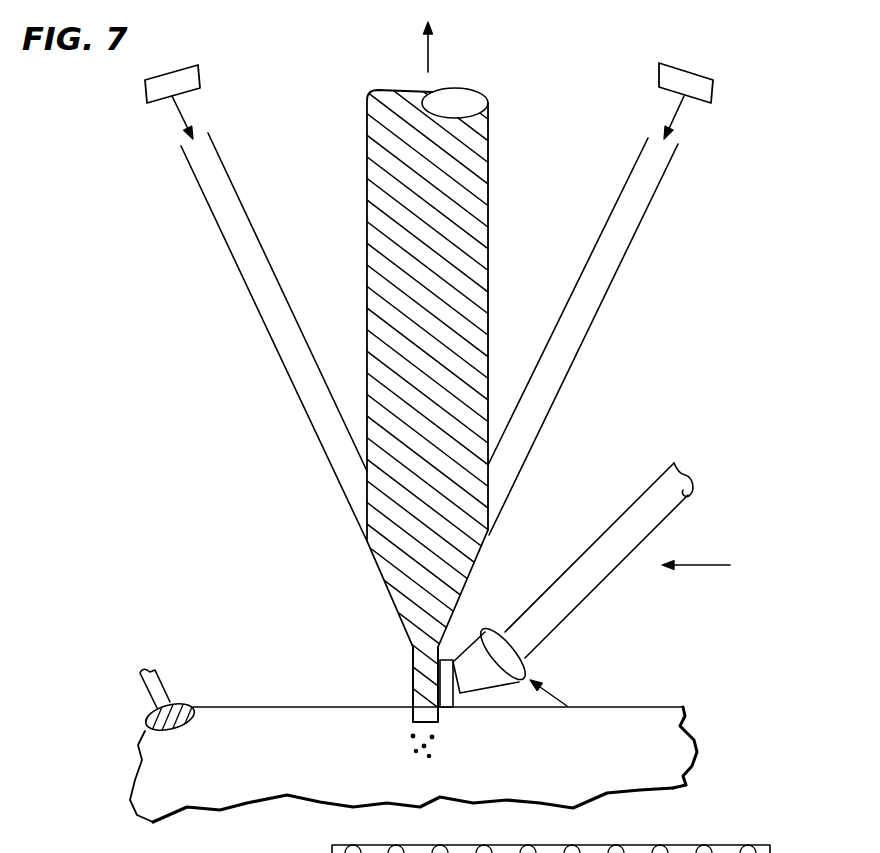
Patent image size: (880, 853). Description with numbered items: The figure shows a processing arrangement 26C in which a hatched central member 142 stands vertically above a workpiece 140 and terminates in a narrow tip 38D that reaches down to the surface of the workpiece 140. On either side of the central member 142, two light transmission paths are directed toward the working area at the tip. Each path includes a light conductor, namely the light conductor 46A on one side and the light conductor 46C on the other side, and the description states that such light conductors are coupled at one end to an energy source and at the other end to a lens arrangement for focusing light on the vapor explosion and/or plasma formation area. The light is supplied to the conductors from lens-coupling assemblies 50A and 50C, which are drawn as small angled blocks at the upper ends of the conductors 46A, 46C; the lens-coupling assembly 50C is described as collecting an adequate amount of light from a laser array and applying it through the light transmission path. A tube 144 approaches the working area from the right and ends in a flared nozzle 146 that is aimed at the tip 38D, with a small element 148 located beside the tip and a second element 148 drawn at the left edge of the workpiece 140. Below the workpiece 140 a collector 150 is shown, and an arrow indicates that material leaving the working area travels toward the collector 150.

The machining station 26C is at (603, 78).
The electrode / tool 142 is at (470, 74).
The tool tip 38D is at (413, 687).
The laser source 50A is at (200, 73).
The lens-coupling assembly 50C is at (713, 90).
The light conductor 46A is at (268, 333).
The light conductor 46C is at (585, 338).
The gas supply tube 144 is at (612, 522).
The nozzle 146 is at (470, 709).
The gas passage 148 is at (455, 646).
The workpiece 140 is at (280, 773).
The collector 150 is at (542, 842).